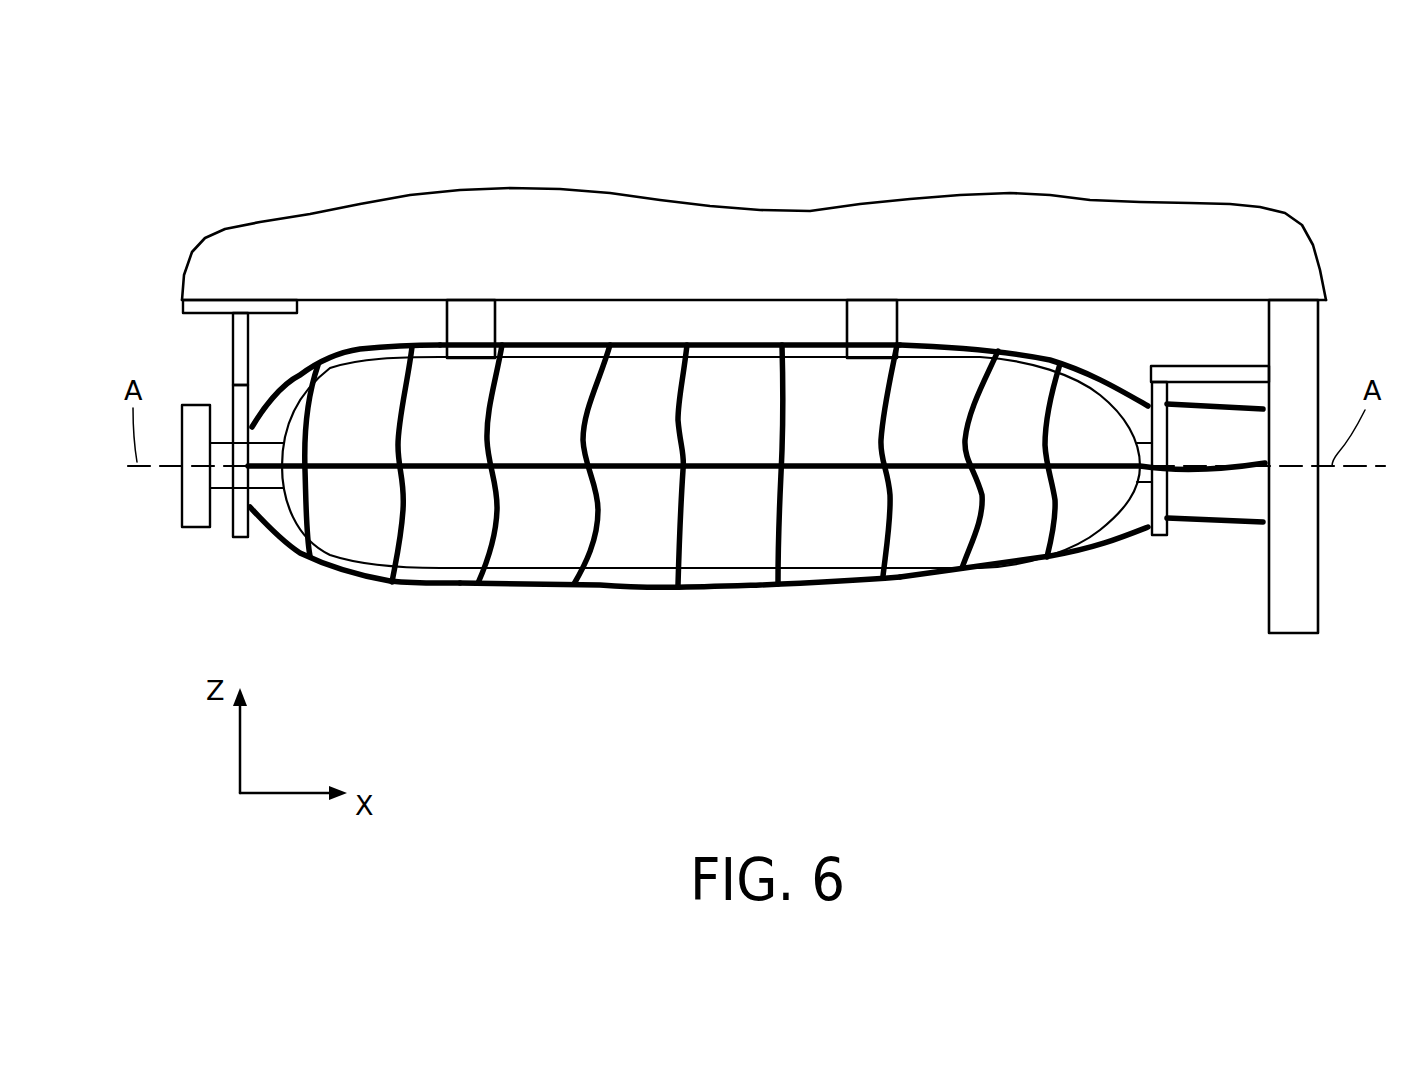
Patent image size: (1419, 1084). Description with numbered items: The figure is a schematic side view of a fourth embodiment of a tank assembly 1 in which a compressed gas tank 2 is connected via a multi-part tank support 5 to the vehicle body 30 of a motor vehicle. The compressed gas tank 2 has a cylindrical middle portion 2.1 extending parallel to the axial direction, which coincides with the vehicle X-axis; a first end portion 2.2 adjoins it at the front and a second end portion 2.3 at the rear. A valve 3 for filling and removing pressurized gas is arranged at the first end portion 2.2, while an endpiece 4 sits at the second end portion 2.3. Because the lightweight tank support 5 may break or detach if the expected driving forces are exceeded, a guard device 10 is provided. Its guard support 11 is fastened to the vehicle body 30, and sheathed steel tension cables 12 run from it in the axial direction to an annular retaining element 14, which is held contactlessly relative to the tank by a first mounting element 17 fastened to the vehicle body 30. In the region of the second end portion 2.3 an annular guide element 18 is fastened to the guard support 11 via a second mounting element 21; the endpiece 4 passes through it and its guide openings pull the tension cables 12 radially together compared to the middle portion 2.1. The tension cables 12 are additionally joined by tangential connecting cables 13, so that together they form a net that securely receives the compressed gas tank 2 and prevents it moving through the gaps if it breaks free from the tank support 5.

The tank assembly 1 is at (1060, 177).
The compressed gas tank 2 is at (709, 467).
The cylindrical middle portion 2.1 is at (647, 333).
The first end portion 2.2 is at (290, 383).
The second end portion 2.3 is at (1122, 381).
The valve 3 is at (198, 530).
The endpiece 4 is at (1141, 495).
The tank support 5 is at (480, 345).
The guard device 10 is at (1013, 668).
The guard support 11 is at (1309, 450).
The tension cables 12 is at (615, 345).
The connecting cables 13 is at (387, 518).
The retaining element 14 is at (236, 540).
The first mounting element 17 is at (228, 348).
The guide element 18 is at (1160, 537).
The second mounting element 21 is at (1217, 367).
The vehicle body 30 is at (762, 267).